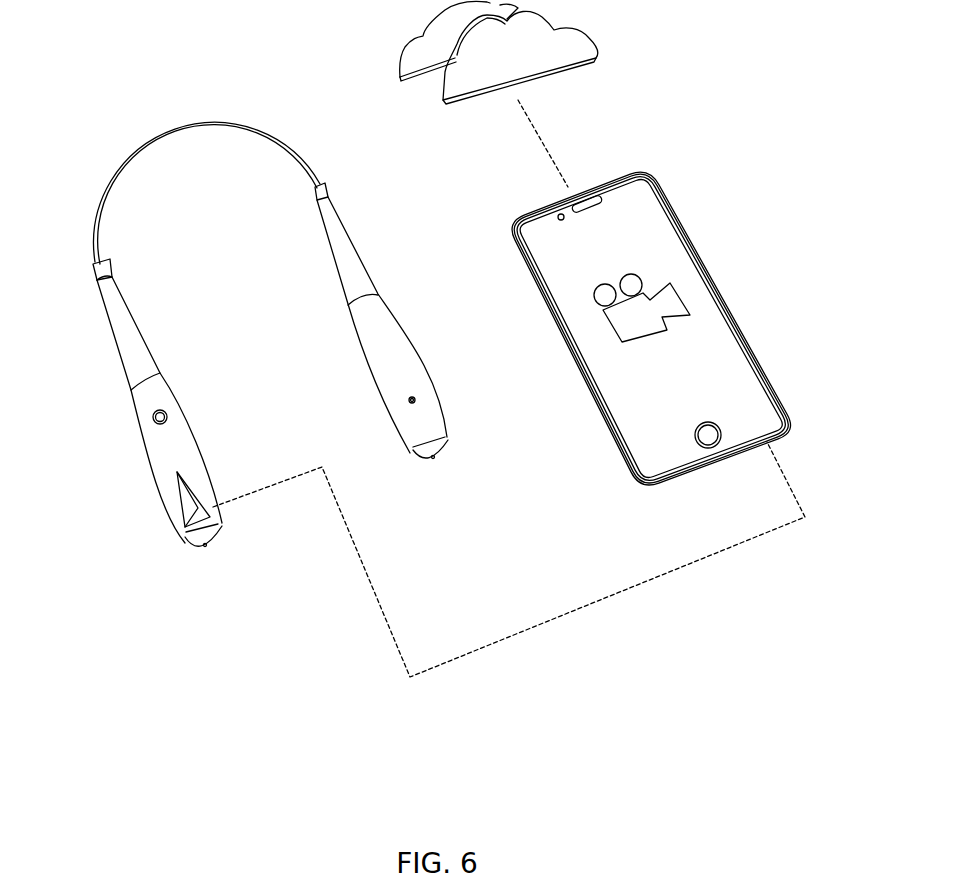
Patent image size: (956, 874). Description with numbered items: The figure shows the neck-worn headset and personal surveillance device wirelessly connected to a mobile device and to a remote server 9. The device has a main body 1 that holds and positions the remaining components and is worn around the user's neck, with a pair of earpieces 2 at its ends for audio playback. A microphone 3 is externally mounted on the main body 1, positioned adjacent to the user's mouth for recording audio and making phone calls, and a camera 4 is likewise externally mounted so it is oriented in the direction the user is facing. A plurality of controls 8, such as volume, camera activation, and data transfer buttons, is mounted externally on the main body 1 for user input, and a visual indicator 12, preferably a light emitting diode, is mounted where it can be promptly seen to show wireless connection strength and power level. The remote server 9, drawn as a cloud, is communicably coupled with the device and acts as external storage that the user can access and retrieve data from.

The main body 1 is at (165, 140).
The pair of earpieces 2 is at (212, 543).
The microphone 3 is at (408, 398).
The camera 4 is at (198, 505).
The plurality of controls 8 is at (138, 453).
The remote server 9 is at (408, 56).
The visual indicator 12 is at (164, 410).